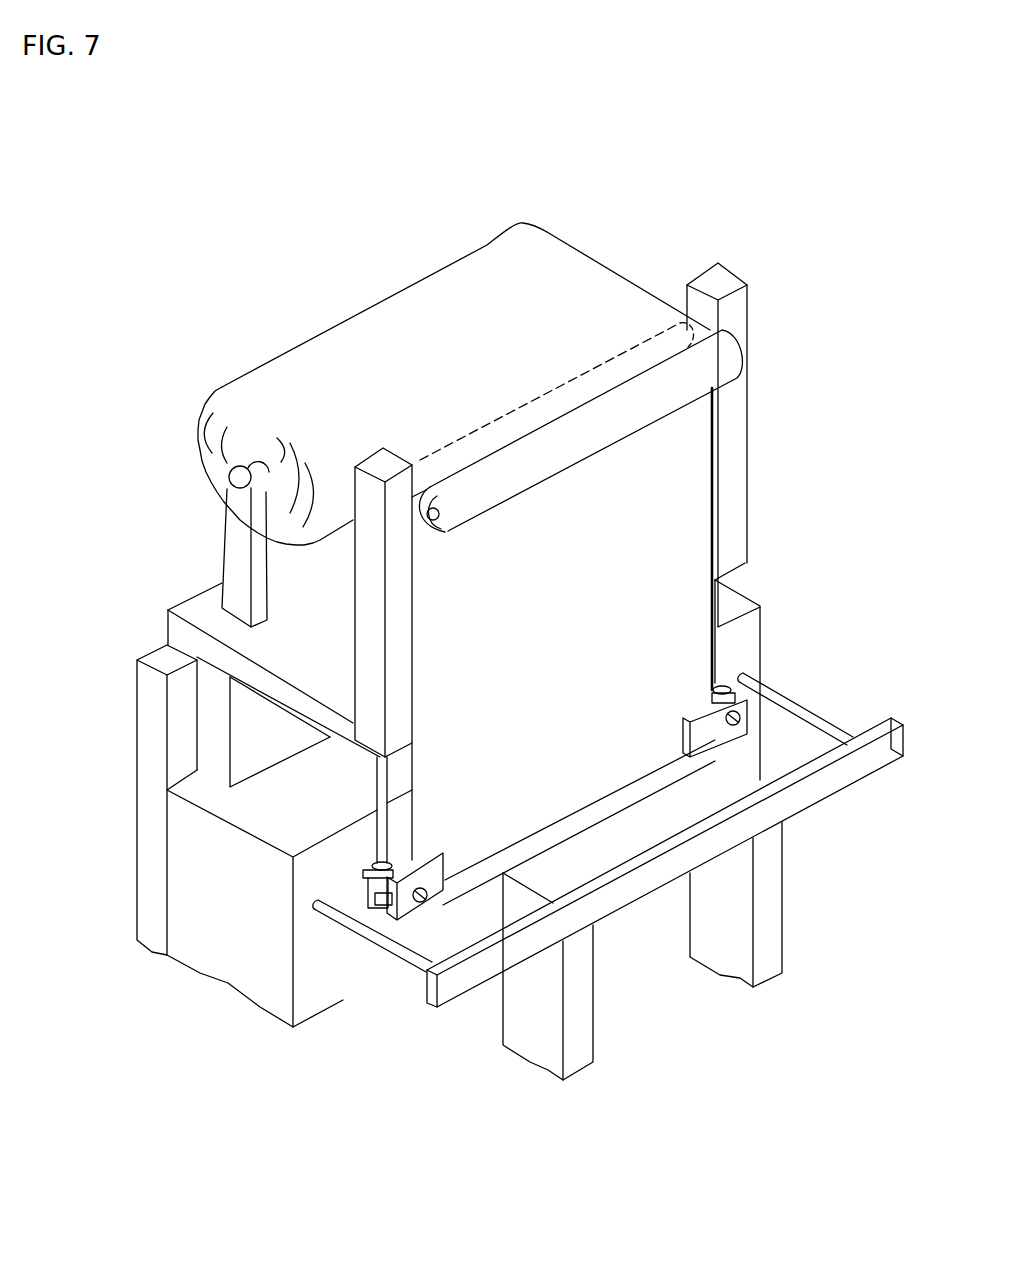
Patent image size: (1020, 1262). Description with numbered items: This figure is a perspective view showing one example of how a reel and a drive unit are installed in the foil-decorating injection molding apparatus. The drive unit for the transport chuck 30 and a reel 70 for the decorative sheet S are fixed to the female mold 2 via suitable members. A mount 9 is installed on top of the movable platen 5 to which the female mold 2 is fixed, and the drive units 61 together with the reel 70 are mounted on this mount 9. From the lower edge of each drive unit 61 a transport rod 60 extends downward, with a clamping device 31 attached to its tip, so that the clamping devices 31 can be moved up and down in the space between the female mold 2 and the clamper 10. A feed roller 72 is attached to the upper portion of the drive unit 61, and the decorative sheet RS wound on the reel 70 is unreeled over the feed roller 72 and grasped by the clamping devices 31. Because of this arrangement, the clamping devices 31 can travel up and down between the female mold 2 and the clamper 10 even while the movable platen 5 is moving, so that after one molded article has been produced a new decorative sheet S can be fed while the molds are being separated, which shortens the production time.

The female mold 2 is at (238, 983).
The movable platen 5 is at (142, 750).
The mount 9 is at (180, 632).
The clamper 10 is at (815, 875).
The transport chuck 30 is at (337, 888).
The clamping device 31 is at (432, 897).
The transport rod 60 is at (380, 797).
The drive unit 61 is at (406, 623).
The reel 70 is at (236, 547).
The feed roller 72 is at (593, 362).
The decorative sheet wound on the reel RS is at (205, 431).
The decorative sheet S is at (700, 487).